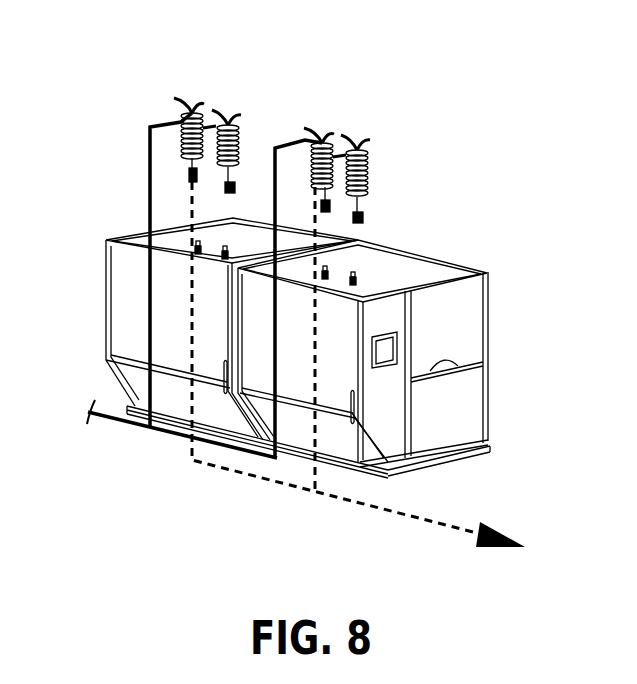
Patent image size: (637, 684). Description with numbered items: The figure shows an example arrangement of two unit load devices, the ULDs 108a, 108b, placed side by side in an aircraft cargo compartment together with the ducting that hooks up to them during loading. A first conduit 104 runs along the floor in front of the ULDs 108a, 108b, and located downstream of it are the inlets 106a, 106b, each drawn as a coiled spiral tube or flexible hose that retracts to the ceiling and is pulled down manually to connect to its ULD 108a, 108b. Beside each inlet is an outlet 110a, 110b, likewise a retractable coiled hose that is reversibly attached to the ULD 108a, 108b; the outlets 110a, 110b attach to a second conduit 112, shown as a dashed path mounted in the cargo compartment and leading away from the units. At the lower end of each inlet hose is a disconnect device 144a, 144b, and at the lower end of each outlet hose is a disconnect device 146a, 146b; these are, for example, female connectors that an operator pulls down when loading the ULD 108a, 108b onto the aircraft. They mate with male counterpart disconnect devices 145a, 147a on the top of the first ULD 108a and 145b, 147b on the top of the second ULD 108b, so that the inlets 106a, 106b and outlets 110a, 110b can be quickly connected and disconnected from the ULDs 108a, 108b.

The first conduit 104 is at (111, 434).
The inlet 106a is at (191, 110).
The outlet 110a is at (235, 118).
The inlet 106b is at (324, 139).
The outlet 110b is at (358, 146).
The ULD 108a is at (121, 231).
The ULD 108b is at (488, 269).
The disconnect device 144a is at (184, 178).
The disconnect device 146a is at (236, 186).
The disconnect device 144b is at (334, 204).
The disconnect device 146b is at (372, 212).
The disconnect device 145a is at (186, 254).
The disconnect device 147a is at (211, 261).
The disconnect device 145b is at (336, 269).
The disconnect device 147b is at (369, 277).
The second conduit 112 is at (337, 512).